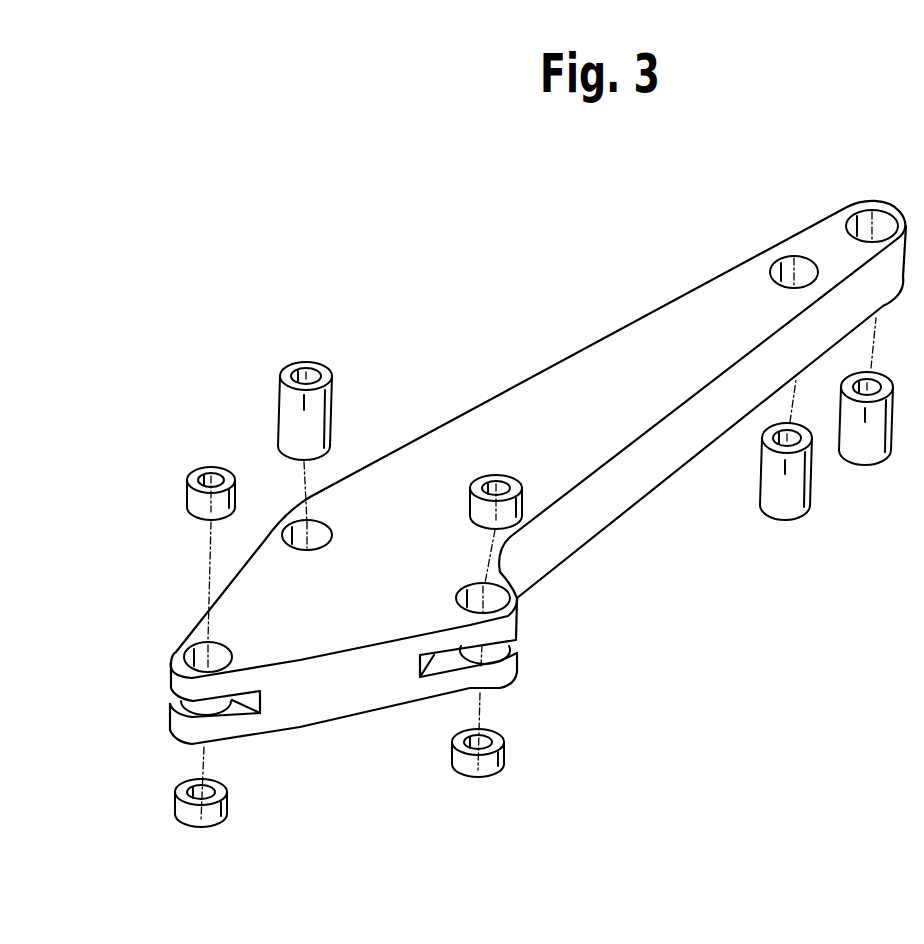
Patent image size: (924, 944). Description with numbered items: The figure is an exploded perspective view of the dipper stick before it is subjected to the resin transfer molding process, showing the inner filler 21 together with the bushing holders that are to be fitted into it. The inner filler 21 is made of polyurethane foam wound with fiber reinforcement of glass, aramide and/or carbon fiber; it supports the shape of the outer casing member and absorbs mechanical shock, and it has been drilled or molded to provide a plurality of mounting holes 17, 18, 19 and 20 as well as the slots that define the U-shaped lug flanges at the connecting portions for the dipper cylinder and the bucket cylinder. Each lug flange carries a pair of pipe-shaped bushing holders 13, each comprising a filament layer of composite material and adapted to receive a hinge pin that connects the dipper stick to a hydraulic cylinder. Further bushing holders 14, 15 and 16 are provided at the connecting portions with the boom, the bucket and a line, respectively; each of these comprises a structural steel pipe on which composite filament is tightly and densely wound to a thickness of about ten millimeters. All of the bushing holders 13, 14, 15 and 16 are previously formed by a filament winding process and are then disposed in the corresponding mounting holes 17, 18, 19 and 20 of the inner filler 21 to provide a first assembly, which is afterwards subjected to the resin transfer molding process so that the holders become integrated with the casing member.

The bushing holder 13 is at (189, 500).
The bushing holder 14 is at (285, 378).
The bushing holder 15 is at (868, 457).
The bushing holder 16 is at (786, 510).
The mounting hole 17 is at (206, 664).
The mounting hole 18 is at (298, 526).
The mounting hole 19 is at (793, 258).
The mounting hole 20 is at (868, 212).
The inner filler 21 is at (556, 351).